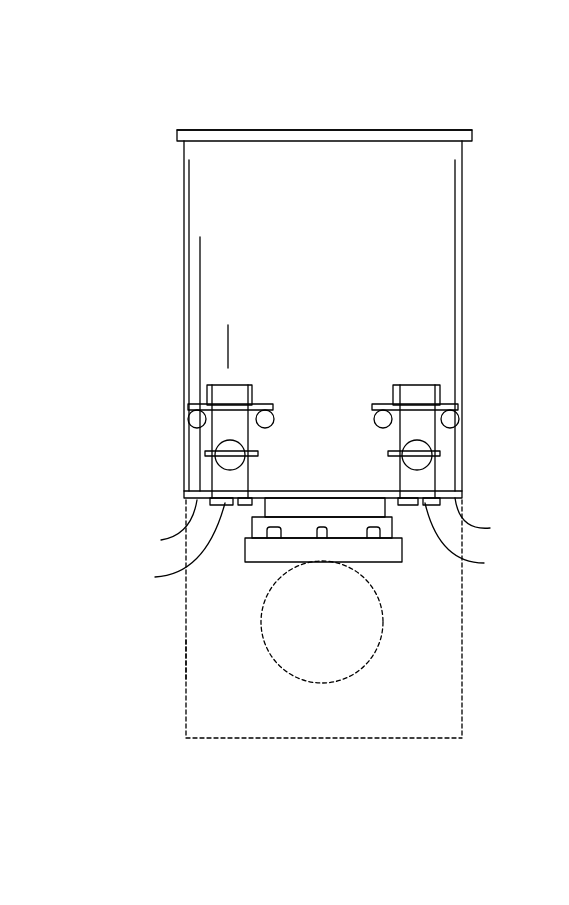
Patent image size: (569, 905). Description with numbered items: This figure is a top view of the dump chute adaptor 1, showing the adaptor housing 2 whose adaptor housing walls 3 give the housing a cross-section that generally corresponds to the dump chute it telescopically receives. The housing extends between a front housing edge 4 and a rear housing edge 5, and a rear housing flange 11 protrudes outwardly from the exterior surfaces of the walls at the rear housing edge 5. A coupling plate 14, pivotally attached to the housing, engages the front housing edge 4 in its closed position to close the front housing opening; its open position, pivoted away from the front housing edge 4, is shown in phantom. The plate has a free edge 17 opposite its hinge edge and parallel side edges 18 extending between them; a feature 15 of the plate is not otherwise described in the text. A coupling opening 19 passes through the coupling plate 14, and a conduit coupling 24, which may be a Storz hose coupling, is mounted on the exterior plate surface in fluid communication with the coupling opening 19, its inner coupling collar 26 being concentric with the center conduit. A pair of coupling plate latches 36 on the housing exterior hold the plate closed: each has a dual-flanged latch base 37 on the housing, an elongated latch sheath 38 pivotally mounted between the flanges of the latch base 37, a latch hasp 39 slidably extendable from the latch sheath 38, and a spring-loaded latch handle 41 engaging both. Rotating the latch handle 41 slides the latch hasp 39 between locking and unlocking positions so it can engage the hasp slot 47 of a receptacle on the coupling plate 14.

The dump chute adaptor 1 is at (146, 68).
The adaptor housing 2 is at (183, 226).
The adaptor housing wall 3 is at (225, 287).
The front housing edge 4 is at (326, 525).
The rear housing edge 5 is at (236, 130).
The rear housing flange 11 is at (340, 130).
The coupling plate 14 is at (178, 507).
The frame 15 is at (198, 657).
The free edge 17 is at (262, 491).
The side edges 18 is at (185, 497).
The coupling opening 19 is at (306, 640).
The conduit coupling 24 is at (262, 577).
The inner coupling collar 26 is at (393, 530).
The coupling plate latch 36 is at (270, 375).
The dual-flanged latch base 37 is at (252, 395).
The latch sheath 38 is at (233, 385).
The latch hasp 39 is at (223, 482).
The spring-loaded latch handle 41 is at (258, 453).
The hasp slot 47 is at (314, 546).